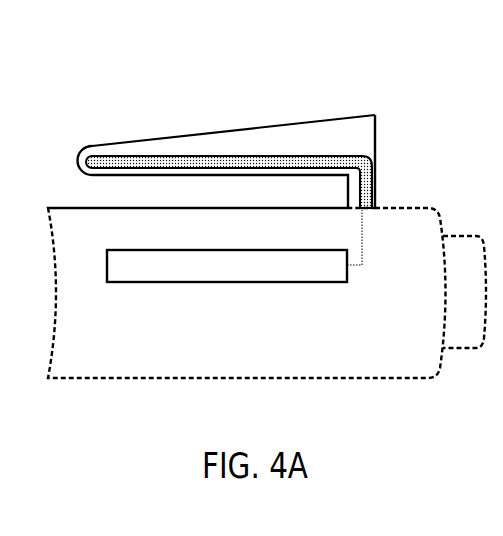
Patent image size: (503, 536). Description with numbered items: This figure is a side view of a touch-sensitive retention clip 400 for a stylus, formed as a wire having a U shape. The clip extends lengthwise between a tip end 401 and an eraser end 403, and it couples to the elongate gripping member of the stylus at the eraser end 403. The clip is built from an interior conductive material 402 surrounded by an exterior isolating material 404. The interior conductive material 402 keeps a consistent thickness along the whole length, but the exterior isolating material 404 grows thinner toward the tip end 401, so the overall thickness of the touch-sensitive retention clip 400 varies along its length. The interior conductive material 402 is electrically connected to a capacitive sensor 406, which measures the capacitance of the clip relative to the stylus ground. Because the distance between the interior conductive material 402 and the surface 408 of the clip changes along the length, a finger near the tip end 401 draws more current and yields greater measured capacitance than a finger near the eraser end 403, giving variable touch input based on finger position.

The touch-sensitive retention clip 400 is at (132, 58).
The tip end 401 is at (92, 198).
The interior conductive material 402 is at (128, 157).
The eraser end 403 is at (392, 188).
The exterior isolating material 404 is at (377, 135).
The capacitive sensor 406 is at (234, 245).
The surface 408 is at (255, 127).